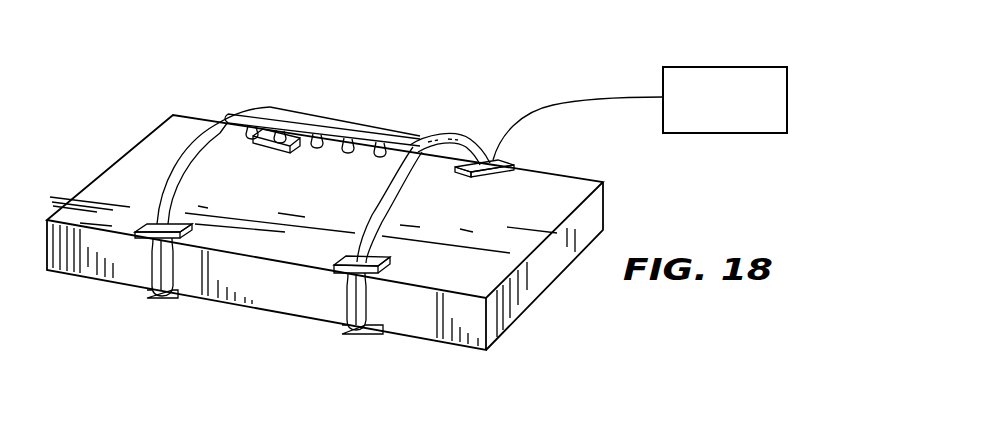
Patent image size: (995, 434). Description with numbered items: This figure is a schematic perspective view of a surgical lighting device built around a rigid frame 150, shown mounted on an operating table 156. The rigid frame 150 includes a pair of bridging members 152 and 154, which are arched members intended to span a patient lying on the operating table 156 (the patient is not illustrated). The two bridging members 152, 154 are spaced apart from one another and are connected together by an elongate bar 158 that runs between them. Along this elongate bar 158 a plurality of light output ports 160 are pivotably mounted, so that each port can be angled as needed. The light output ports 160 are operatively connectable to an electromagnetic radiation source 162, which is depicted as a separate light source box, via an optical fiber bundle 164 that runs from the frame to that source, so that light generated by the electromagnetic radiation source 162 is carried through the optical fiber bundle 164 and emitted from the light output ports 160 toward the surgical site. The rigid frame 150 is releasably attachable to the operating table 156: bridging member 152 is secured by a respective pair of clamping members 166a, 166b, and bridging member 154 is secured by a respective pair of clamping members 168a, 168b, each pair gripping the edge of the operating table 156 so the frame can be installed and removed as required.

The rigid frame 150 is at (222, 80).
The bridging member 152 is at (185, 152).
The bridging member 154 is at (392, 190).
The operating table 156 is at (417, 322).
The elongate bar 158 is at (268, 118).
The light output ports 160 is at (381, 158).
The electromagnetic radiation source 162 is at (720, 67).
The optical fiber bundle 164 is at (590, 104).
The clamping member 166a is at (134, 268).
The clamping member 166b is at (266, 170).
The clamping member 168a is at (325, 302).
The clamping member 168b is at (525, 181).